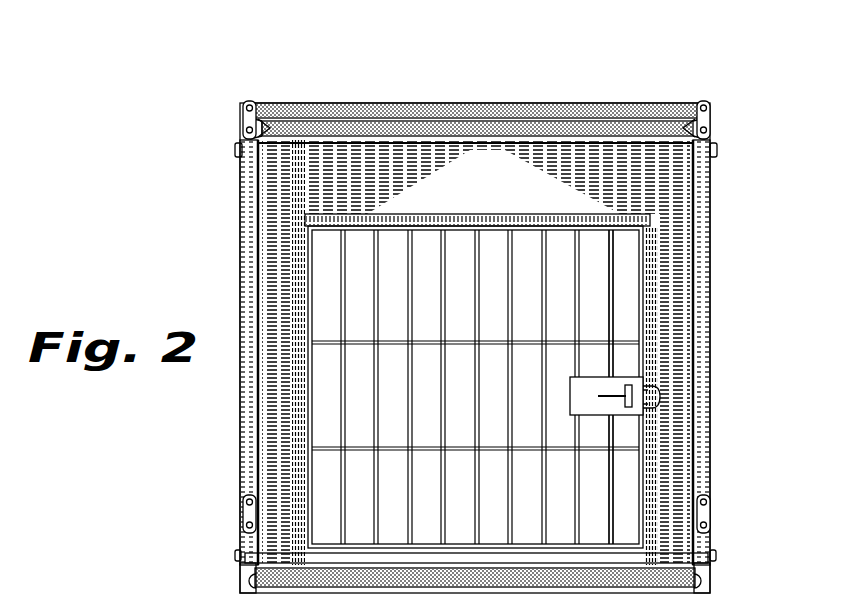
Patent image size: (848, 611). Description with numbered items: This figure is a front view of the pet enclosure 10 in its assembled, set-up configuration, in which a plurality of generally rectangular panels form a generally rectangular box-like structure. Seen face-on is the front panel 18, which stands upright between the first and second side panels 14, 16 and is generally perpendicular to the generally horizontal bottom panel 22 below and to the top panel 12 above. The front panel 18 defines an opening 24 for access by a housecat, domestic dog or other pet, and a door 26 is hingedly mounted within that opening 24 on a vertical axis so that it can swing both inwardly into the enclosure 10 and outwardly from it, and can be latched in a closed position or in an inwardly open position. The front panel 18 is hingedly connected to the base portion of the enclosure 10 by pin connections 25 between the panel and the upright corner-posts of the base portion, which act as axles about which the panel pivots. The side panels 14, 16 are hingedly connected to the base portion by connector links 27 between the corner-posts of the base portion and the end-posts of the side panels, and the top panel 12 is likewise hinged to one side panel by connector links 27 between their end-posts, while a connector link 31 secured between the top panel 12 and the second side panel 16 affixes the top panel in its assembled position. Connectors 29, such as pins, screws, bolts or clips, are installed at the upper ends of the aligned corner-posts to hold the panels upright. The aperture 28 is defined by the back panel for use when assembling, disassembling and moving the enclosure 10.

The enclosure 10 is at (652, 62).
The top panel 12 is at (480, 104).
The first side panel 14 is at (710, 465).
The second side panel 16 is at (238, 465).
The front panel 18 is at (682, 250).
The bottom panel 22 is at (470, 586).
The opening 24 is at (329, 303).
The pin connections 25 is at (235, 555).
The door 26 is at (610, 320).
The connector links 27 is at (710, 125).
The aperture 28 is at (660, 380).
The connectors 29 is at (235, 150).
The connector link 31 is at (243, 113).